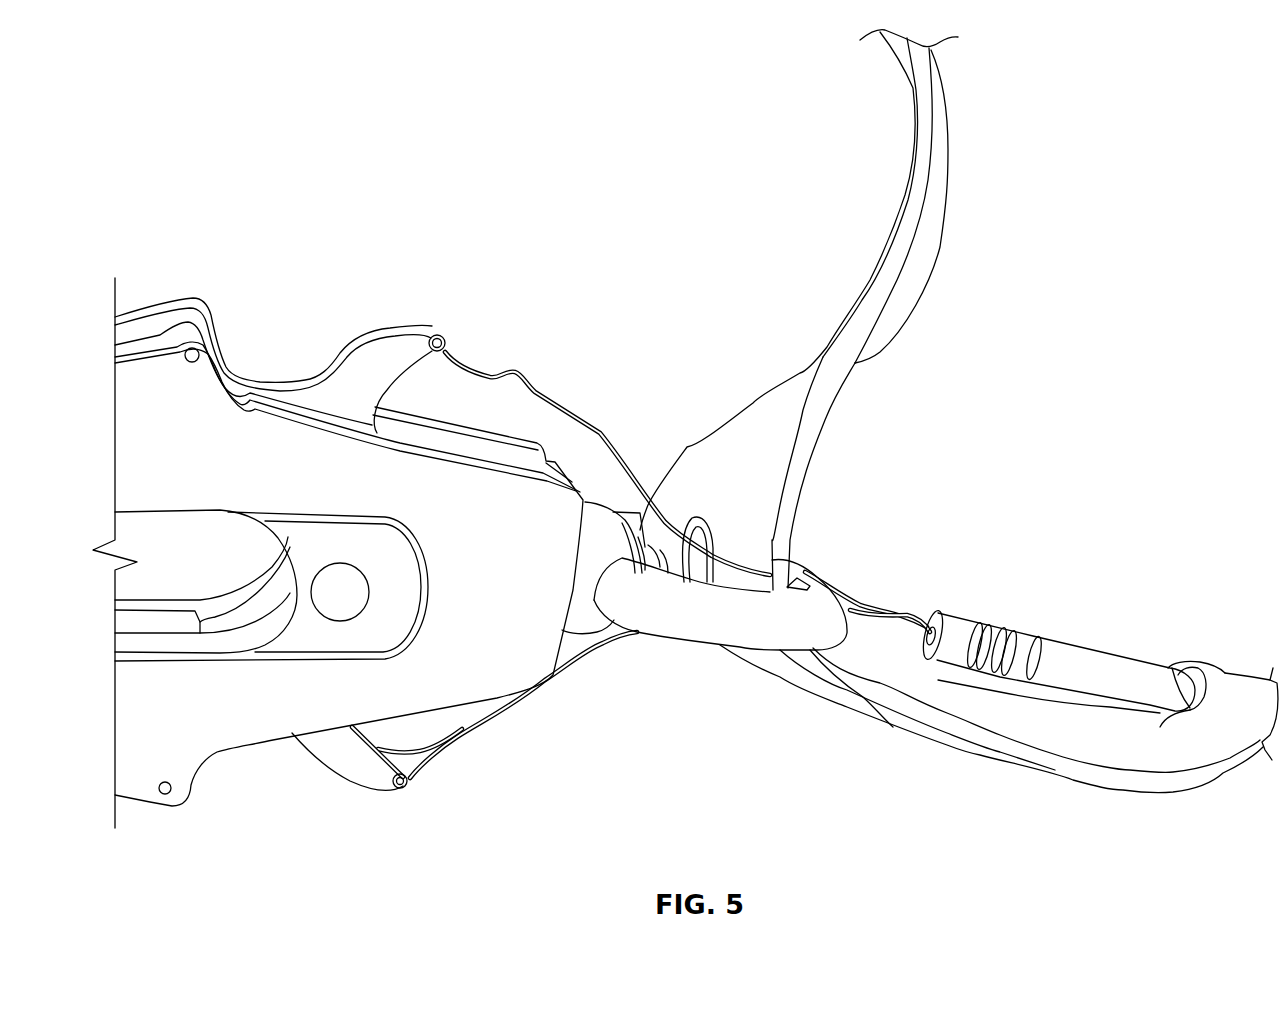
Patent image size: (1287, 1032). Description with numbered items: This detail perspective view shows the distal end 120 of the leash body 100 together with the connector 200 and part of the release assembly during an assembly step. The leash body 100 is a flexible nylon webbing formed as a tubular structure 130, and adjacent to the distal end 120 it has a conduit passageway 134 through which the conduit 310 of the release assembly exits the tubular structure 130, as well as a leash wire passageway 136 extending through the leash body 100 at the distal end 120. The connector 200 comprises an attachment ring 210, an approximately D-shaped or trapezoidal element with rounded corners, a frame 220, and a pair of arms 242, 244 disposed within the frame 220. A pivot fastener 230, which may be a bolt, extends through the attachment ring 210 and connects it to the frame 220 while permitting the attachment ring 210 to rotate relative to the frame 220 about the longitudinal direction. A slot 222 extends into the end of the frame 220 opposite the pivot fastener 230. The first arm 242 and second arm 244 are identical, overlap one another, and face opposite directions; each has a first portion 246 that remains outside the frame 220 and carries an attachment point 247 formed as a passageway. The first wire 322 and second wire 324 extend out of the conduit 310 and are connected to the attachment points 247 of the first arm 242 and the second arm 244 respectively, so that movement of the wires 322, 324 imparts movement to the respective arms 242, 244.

The leash body 100 is at (1165, 802).
The distal end 120 is at (790, 507).
The tubular structure 130 is at (936, 225).
The conduit passageway 134 is at (1202, 653).
The leash wire passageway 136 is at (700, 492).
The connector 200 is at (470, 544).
The attachment ring 210 is at (770, 632).
The frame 220 is at (295, 688).
The slot 222 is at (186, 537).
The pivot fastener 230 is at (643, 510).
The first arm 242 is at (377, 373).
The second arm 244 is at (352, 784).
The first portion 246 is at (273, 567).
The attachment point 247 is at (437, 332).
The conduit 310 is at (1065, 655).
The first wire 322 is at (527, 390).
The second wire 324 is at (528, 700).